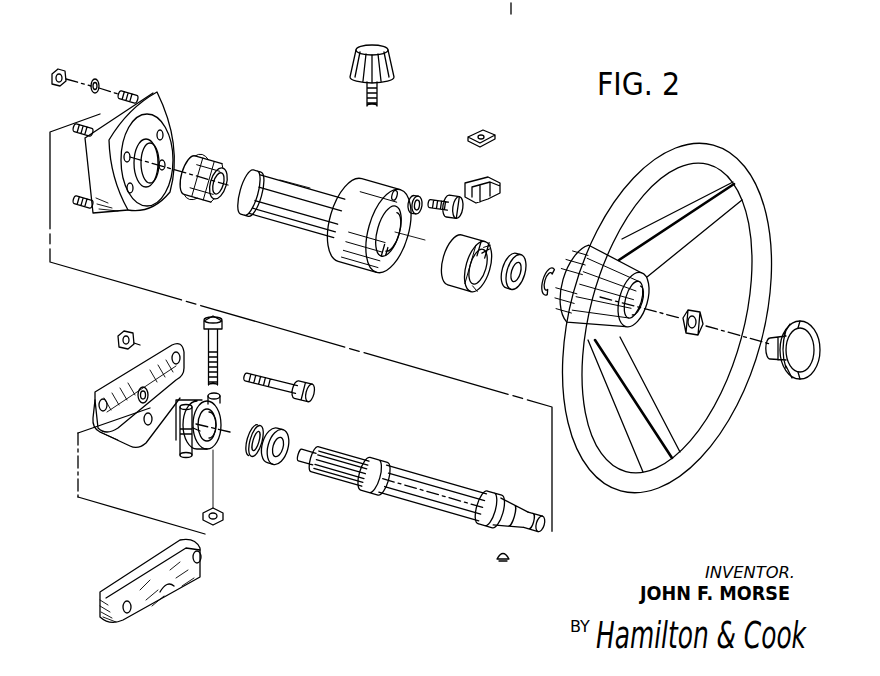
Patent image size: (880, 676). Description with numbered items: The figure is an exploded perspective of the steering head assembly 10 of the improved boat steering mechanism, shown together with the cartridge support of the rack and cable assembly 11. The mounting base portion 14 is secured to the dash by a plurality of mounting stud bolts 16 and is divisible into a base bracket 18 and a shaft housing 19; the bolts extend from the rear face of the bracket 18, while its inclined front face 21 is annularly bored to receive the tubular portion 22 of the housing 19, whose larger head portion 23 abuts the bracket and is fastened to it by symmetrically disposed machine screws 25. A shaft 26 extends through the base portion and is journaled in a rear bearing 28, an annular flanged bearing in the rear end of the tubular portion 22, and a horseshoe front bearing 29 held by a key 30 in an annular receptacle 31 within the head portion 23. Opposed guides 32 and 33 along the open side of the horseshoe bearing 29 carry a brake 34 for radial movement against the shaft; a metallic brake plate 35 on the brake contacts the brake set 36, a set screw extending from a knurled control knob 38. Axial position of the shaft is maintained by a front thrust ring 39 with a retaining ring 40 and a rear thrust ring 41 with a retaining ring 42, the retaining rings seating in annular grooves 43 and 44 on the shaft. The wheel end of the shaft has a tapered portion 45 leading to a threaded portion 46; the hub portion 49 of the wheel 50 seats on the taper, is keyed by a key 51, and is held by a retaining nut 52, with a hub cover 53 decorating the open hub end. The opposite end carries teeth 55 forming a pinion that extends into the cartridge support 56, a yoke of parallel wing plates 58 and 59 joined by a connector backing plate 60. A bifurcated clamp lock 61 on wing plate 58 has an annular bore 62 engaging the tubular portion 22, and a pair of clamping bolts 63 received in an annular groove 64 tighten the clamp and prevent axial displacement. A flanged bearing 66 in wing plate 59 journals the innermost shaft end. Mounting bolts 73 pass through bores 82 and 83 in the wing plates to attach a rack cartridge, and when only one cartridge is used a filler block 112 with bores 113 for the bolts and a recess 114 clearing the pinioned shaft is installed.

The steering head assembly 10 is at (457, 108).
The rack and cable assembly 11 is at (309, 587).
The mounting base portion 14 is at (163, 155).
The mounting stud bolts 16 is at (133, 90).
The base bracket 18 is at (176, 88).
The shaft housing 19 is at (321, 180).
The front face 21 is at (168, 112).
The tubular portion 22 is at (283, 202).
The head portion 23 is at (380, 223).
The machine screws 25 is at (440, 196).
The shaft 26 is at (439, 493).
The rear bearing 28 is at (212, 168).
The front bearing 29 is at (500, 243).
The key 30 is at (498, 257).
The annular receptacle 31 is at (376, 250).
The guide 32 is at (481, 250).
The guide 33 is at (452, 244).
The brake 34 is at (502, 188).
The brake plate 35 is at (496, 136).
The brake set 36 is at (384, 98).
The control knob 38 is at (394, 62).
The front thrust ring 39 is at (515, 291).
The retaining ring 40 is at (546, 298).
The rear thrust ring 41 is at (280, 466).
The retaining ring 42 is at (254, 460).
The annular groove 43 is at (490, 497).
The annular groove 44 is at (369, 465).
The tapered portion 45 is at (497, 520).
The threaded portion 46 is at (523, 532).
The hub portion 49 is at (624, 272).
The wheel 50 is at (667, 318).
The key 51 is at (503, 566).
The retaining nut 52 is at (693, 310).
The hub cover 53 is at (800, 332).
The teeth 55 is at (331, 448).
The cartridge support 56 is at (130, 446).
The wing plate 58 is at (216, 393).
The wing plate 59 is at (118, 403).
The connector backing plate 60 is at (118, 434).
The clamp lock 61 is at (221, 421).
The annular bore 62 is at (208, 442).
The clamping bolts 63 is at (218, 346).
The annular groove 64 is at (253, 220).
The flanged bearing 66 is at (145, 386).
The mounting bolts 73 is at (312, 388).
The bore 82 is at (148, 427).
The bore 83 is at (177, 352).
The filler block 112 is at (192, 605).
The bores 113 is at (202, 556).
The recess 114 is at (170, 590).